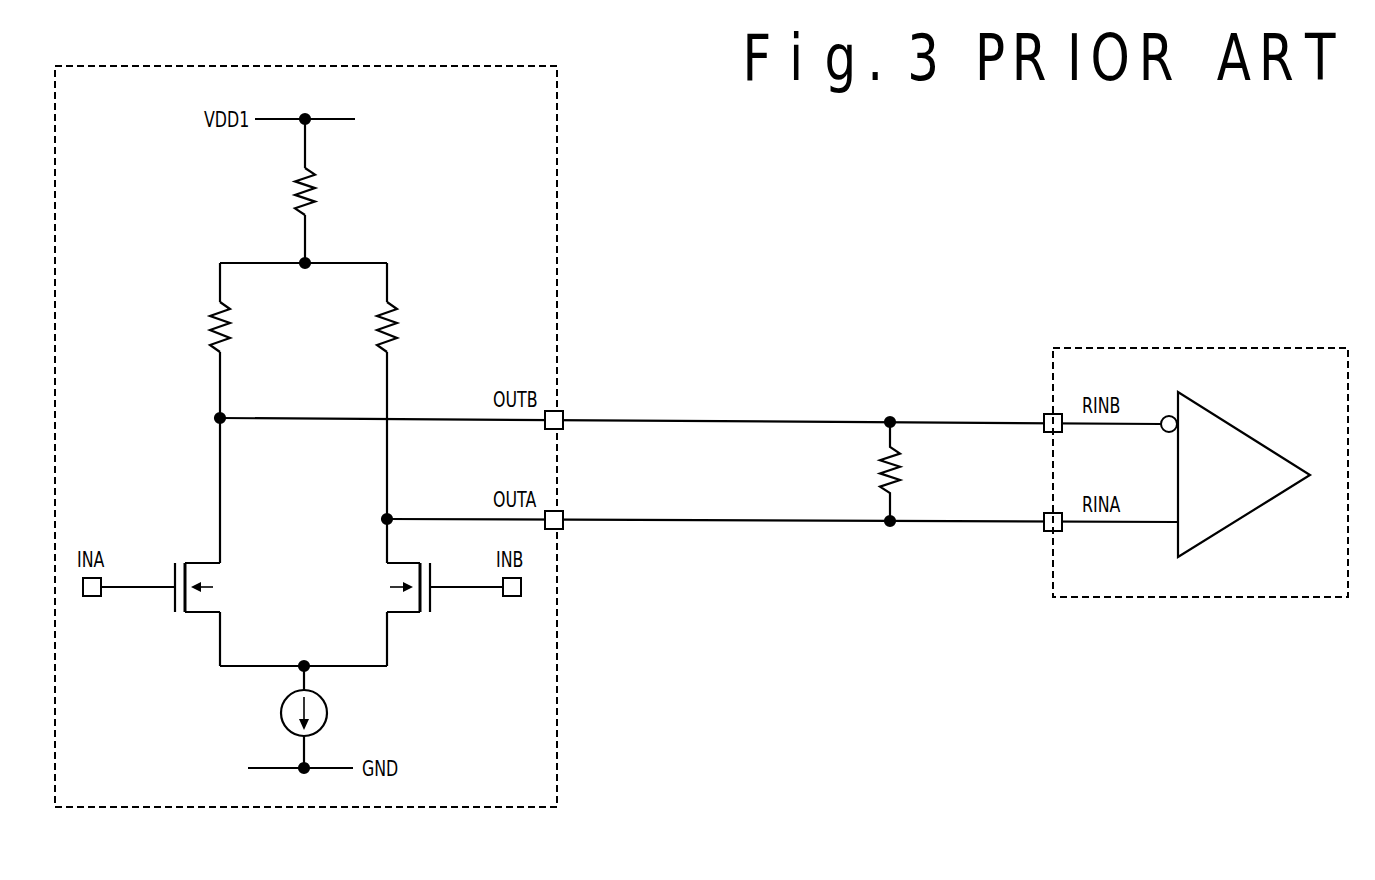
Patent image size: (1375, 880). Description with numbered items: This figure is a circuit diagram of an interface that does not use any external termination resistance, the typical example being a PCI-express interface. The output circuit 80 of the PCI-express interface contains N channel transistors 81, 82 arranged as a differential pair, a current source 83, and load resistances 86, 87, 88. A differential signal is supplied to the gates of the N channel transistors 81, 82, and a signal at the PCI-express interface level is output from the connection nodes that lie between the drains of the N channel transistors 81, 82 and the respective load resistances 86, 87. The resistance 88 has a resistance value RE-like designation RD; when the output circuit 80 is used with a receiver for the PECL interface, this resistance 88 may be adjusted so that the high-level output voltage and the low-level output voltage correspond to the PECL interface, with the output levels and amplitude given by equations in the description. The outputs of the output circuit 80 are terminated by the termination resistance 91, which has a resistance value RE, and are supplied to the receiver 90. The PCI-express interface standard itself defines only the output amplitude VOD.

The output circuit 80 is at (557, 170).
The N channel transistor 81 is at (188, 616).
The N channel transistor 82 is at (408, 618).
The current source 83 is at (280, 711).
The load resistance 86 is at (206, 322).
The load resistance 87 is at (403, 328).
The load resistance 88 is at (292, 186).
The receiver 90 is at (1184, 348).
The termination resistance 91 is at (908, 476).